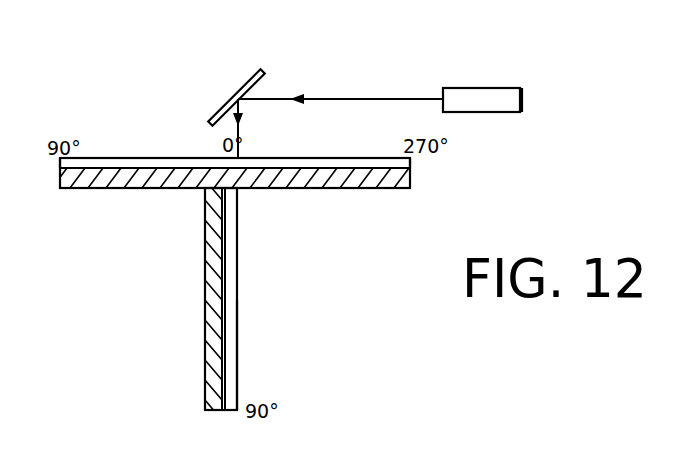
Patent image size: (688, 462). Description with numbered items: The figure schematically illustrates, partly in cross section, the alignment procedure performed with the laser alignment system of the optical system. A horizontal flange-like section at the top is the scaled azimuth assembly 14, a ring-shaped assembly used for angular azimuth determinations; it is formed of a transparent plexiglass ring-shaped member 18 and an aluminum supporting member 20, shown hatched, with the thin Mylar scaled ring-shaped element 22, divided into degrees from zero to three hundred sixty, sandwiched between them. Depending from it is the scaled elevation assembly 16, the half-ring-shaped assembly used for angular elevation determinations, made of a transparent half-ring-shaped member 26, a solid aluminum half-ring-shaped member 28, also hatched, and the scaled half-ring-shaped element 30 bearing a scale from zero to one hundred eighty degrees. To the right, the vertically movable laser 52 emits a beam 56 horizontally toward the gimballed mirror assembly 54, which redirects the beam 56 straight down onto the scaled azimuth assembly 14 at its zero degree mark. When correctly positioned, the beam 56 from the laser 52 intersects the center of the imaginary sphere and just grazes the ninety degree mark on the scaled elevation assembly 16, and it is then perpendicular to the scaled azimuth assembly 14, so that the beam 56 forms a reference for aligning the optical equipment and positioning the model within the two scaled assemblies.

The scaled azimuth assembly 14 is at (129, 144).
The scaled elevation assembly 16 is at (178, 311).
The ring-shaped member 18 is at (313, 163).
The supporting member 20 is at (372, 187).
The scaled ring-shaped element 22 is at (157, 158).
The transparent half-ring-shaped member 26 is at (237, 278).
The aluminum half-ring-shaped member 28 is at (215, 257).
The scaled half-ring-shaped element 30 is at (230, 378).
The laser 52 is at (490, 87).
The gimballed mirror assembly 54 is at (223, 91).
The beam 56 is at (340, 99).